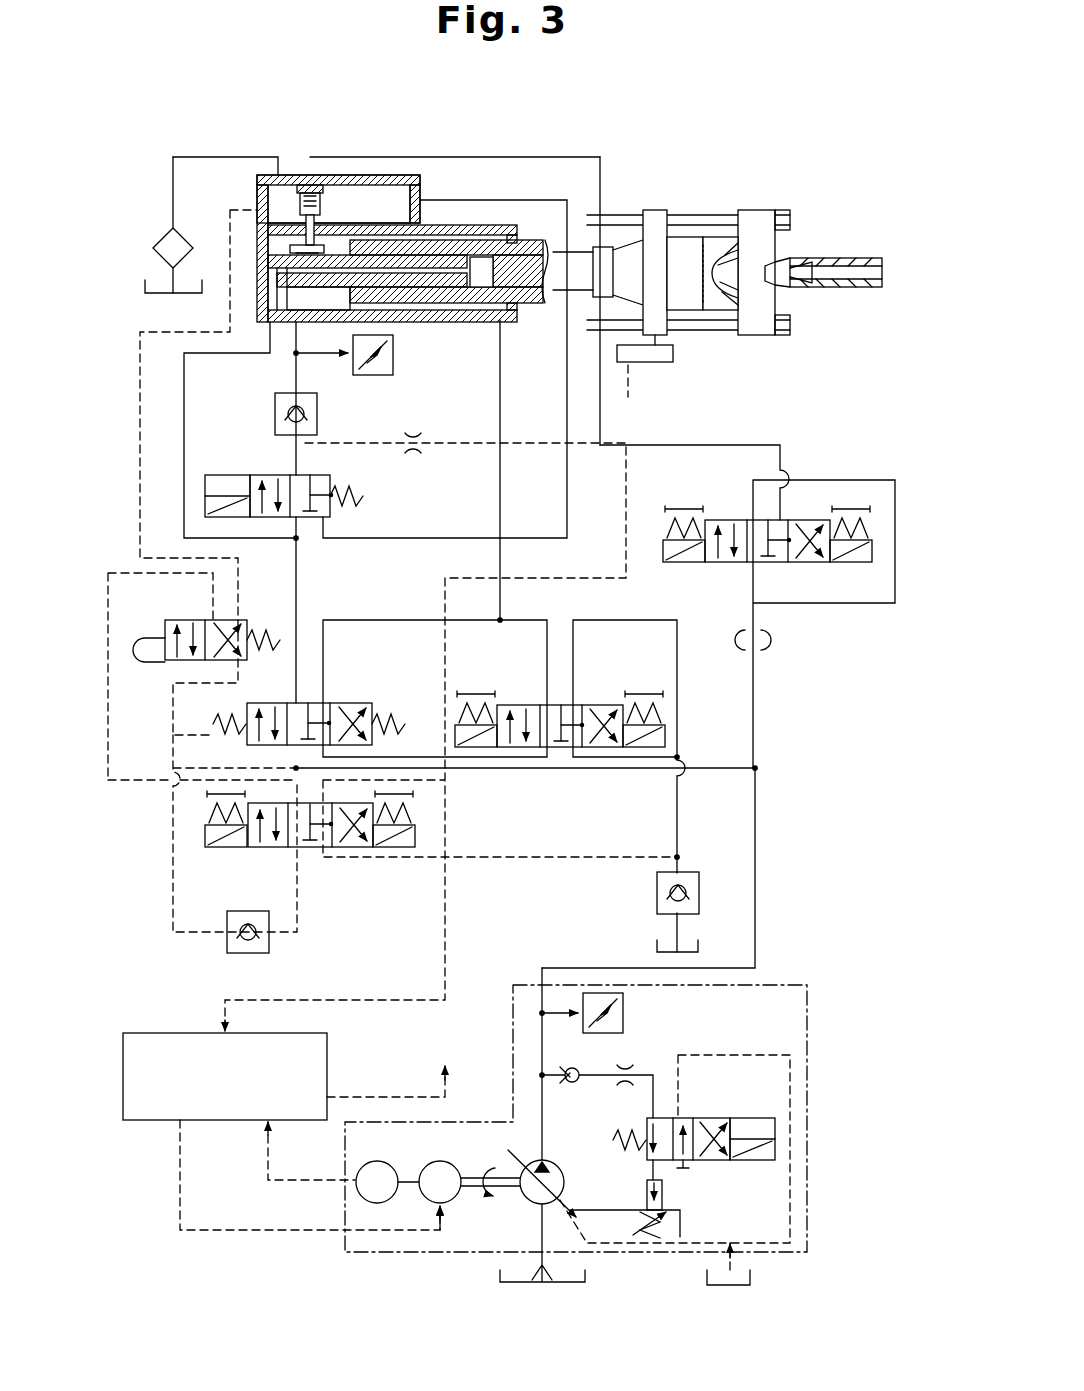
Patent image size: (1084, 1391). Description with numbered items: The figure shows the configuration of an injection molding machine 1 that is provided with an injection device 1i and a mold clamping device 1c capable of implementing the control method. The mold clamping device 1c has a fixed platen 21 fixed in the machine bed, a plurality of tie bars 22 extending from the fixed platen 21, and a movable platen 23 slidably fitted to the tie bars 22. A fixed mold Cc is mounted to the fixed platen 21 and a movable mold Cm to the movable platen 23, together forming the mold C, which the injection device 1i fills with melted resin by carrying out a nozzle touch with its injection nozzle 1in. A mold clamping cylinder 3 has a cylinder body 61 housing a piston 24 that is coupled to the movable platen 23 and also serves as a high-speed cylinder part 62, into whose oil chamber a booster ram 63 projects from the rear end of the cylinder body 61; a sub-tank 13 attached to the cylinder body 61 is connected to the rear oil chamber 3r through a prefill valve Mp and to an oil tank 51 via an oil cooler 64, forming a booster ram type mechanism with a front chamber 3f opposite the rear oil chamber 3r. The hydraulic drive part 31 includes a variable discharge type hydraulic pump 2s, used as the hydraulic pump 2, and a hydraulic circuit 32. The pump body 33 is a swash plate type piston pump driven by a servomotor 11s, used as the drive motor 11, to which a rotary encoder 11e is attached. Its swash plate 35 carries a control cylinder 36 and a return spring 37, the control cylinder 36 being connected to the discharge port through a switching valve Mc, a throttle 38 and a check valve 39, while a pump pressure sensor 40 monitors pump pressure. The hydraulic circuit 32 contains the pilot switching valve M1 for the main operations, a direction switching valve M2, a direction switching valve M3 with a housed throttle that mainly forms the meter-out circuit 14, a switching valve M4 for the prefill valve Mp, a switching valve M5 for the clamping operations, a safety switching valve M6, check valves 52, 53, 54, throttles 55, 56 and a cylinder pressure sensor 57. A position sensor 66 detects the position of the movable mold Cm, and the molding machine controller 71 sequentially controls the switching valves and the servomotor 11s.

The injection molding machine 1 is at (814, 152).
The mold clamping device 1c is at (622, 142).
The injection device 1i is at (835, 296).
The injection nozzle 1in is at (798, 260).
The hydraulic pump 2 is at (814, 1002).
The variable discharge type hydraulic pump 2s is at (813, 1110).
The mold clamping cylinder 3 is at (456, 342).
The rear oil chamber 3r is at (330, 300).
The front oil chamber 3f is at (474, 305).
The drive motor 11 is at (436, 1160).
The rotary encoder 11e is at (352, 1186).
The servomotor 11s is at (456, 1205).
The sub-tank 13 is at (420, 187).
The meter-out circuit 14 is at (570, 782).
The fixed platen 21 is at (775, 210).
The tie bars 22 is at (728, 213).
The movable platen 23 is at (656, 208).
The piston 24 is at (527, 307).
The hydraulic drive part 31 is at (832, 806).
The hydraulic circuit 32 is at (817, 675).
The pump body 33 is at (558, 1165).
The swash plate 35 is at (565, 1202).
The control cylinder 36 is at (664, 1198).
The return spring 37 is at (648, 1240).
The throttle 38 is at (630, 1068).
The check valve 39 is at (579, 1083).
The pump pressure sensor 40 is at (627, 1013).
The oil tank 51 is at (145, 290).
The check valve 52 is at (272, 948).
The check valve 53 is at (698, 882).
The check valve 54 is at (318, 413).
The throttle 55 is at (762, 643).
The throttle 56 is at (416, 457).
The cylinder pressure sensor 57 is at (393, 366).
The cylinder body 61 is at (506, 200).
The high-speed cylinder part 62 is at (419, 305).
The booster ram 63 is at (290, 258).
The oil cooler 64 is at (157, 246).
The position sensor 66 is at (652, 363).
The molding machine controller 71 is at (147, 1033).
The prefill valve Mp is at (336, 206).
The mold C is at (714, 226).
The movable mold Cm is at (692, 312).
The fixed mold Cc is at (722, 312).
The pilot switching valve M1 is at (320, 874).
The direction switching valve M2 is at (346, 690).
The direction switching valve M3 is at (588, 683).
The switching valve M4 is at (732, 571).
The switching valve M5 is at (247, 468).
The switching valve M6 is at (192, 615).
The switching valve Mc is at (715, 1162).